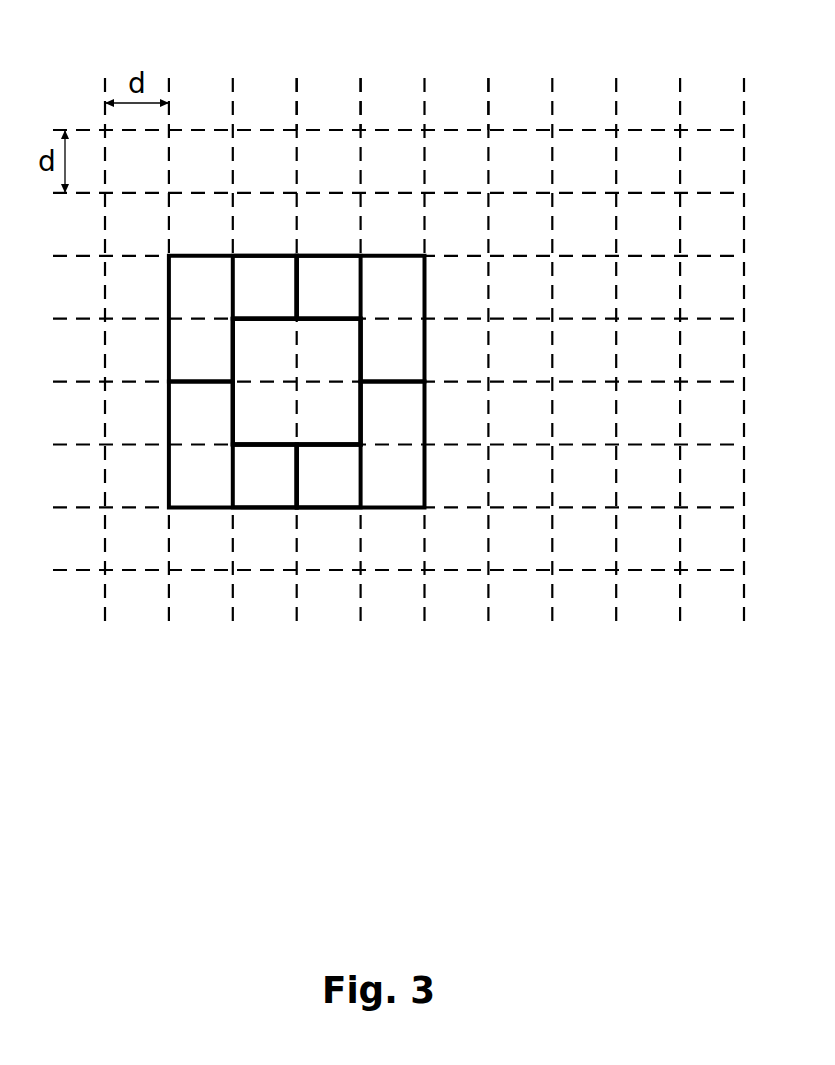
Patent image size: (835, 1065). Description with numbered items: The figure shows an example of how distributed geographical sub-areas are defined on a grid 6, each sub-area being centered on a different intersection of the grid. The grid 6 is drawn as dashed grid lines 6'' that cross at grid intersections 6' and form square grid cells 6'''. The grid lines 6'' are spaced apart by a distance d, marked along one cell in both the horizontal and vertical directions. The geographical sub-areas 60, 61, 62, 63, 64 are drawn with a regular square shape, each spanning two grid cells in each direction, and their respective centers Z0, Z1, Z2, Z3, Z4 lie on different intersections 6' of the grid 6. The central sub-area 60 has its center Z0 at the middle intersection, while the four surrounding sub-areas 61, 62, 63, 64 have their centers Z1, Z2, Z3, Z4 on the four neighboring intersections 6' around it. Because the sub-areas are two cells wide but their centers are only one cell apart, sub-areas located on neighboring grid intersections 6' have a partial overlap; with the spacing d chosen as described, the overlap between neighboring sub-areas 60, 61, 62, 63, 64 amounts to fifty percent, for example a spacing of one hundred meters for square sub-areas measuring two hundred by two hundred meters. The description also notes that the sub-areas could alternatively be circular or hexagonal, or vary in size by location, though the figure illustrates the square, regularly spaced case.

The grid 6 is at (391, 376).
The grid intersections 6' is at (390, 74).
The grid lines 6'' is at (328, 74).
The square grid cells 6''' is at (518, 83).
The geographical sub-area 60 is at (250, 349).
The geographical sub-area 61 is at (203, 268).
The geographical sub-area 62 is at (410, 291).
The geographical sub-area 63 is at (393, 490).
The geographical sub-area 64 is at (182, 468).
The center Z0 is at (299, 383).
The center Z1 is at (238, 315).
The center Z2 is at (355, 315).
The center Z3 is at (354, 448).
The center Z4 is at (239, 448).